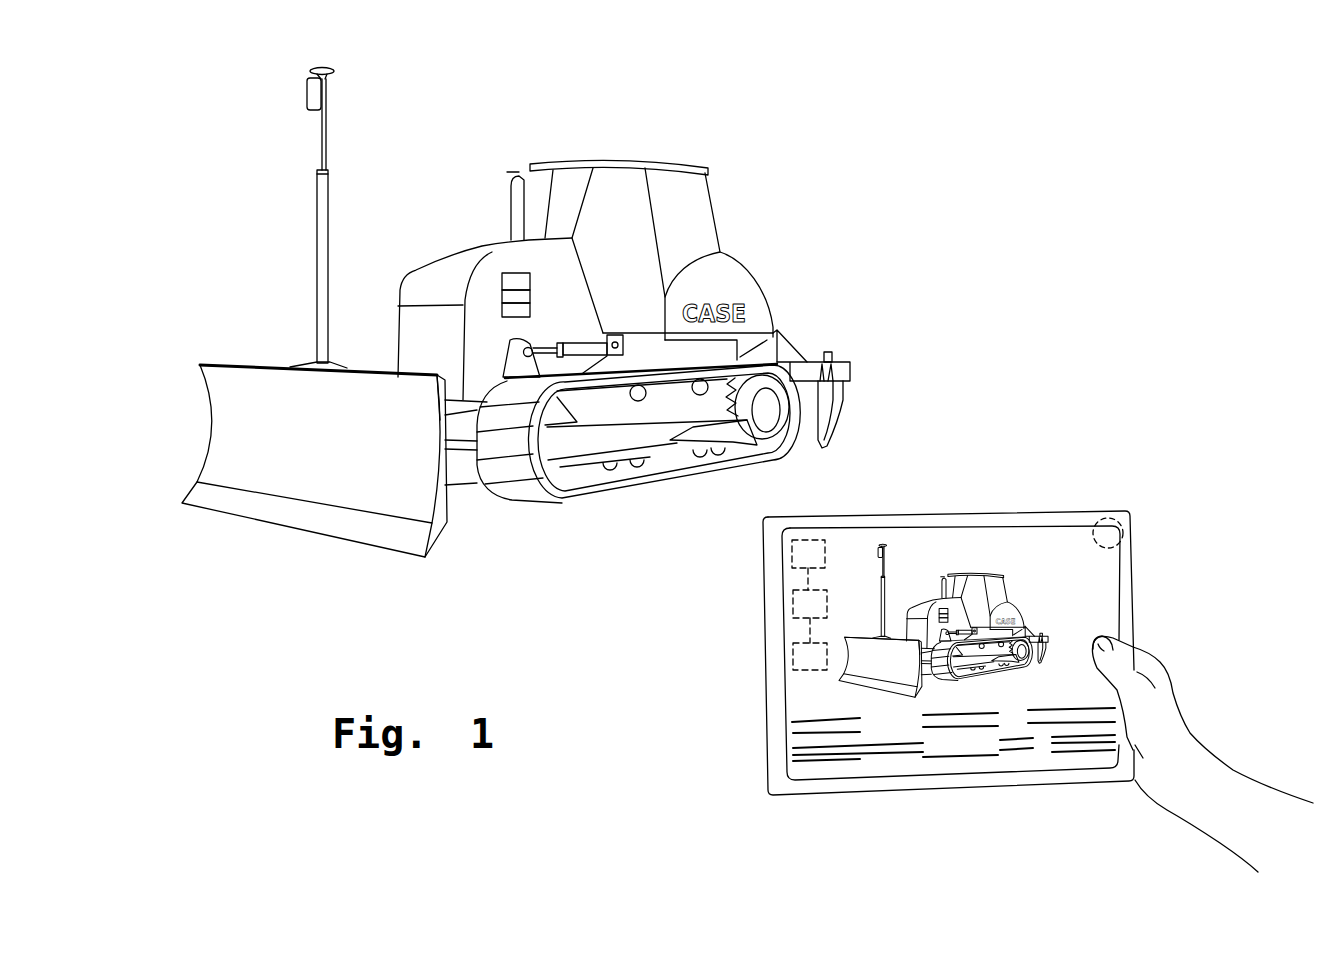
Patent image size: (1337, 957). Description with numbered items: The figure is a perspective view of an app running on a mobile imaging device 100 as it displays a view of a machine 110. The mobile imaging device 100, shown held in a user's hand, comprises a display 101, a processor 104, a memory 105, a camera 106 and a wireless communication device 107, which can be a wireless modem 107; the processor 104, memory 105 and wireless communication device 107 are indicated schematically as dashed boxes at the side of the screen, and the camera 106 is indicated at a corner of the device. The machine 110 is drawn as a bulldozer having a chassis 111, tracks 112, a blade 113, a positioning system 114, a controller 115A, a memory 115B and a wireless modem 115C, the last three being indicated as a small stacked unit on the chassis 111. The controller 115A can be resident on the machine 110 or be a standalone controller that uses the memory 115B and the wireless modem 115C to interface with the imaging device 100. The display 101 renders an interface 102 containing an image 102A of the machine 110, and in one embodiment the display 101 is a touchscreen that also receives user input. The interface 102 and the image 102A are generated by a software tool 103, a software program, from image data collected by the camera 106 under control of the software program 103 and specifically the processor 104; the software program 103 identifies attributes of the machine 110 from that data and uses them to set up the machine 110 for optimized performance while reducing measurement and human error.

The mobile imaging device 100 is at (956, 626).
The display 101 is at (1053, 522).
The interface 102 is at (1078, 608).
The image of machine 102A is at (967, 572).
The software tool 103 is at (730, 672).
The processor 104 is at (792, 552).
The memory 105 is at (793, 605).
The camera 106 is at (1130, 512).
The wireless communication device 107 is at (793, 650).
The machine 110 is at (522, 313).
The chassis 111 is at (773, 327).
The tracks 112 is at (650, 490).
The blade 113 is at (217, 447).
The positioning system 114 is at (330, 93).
The controller 115A is at (507, 273).
The memory 115B is at (502, 292).
The wireless modem 115C is at (502, 310).